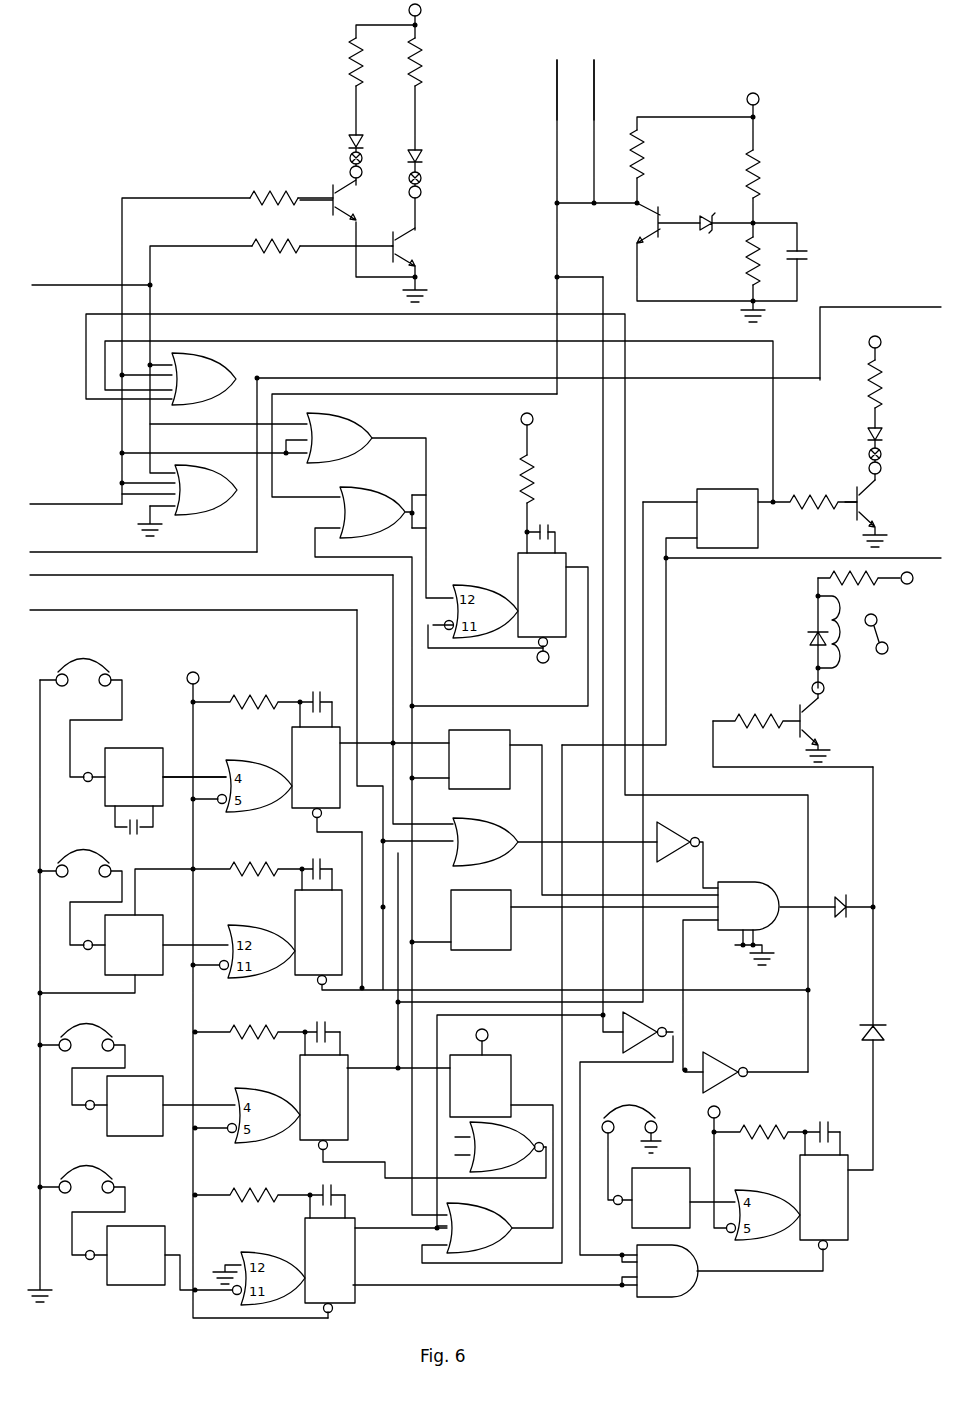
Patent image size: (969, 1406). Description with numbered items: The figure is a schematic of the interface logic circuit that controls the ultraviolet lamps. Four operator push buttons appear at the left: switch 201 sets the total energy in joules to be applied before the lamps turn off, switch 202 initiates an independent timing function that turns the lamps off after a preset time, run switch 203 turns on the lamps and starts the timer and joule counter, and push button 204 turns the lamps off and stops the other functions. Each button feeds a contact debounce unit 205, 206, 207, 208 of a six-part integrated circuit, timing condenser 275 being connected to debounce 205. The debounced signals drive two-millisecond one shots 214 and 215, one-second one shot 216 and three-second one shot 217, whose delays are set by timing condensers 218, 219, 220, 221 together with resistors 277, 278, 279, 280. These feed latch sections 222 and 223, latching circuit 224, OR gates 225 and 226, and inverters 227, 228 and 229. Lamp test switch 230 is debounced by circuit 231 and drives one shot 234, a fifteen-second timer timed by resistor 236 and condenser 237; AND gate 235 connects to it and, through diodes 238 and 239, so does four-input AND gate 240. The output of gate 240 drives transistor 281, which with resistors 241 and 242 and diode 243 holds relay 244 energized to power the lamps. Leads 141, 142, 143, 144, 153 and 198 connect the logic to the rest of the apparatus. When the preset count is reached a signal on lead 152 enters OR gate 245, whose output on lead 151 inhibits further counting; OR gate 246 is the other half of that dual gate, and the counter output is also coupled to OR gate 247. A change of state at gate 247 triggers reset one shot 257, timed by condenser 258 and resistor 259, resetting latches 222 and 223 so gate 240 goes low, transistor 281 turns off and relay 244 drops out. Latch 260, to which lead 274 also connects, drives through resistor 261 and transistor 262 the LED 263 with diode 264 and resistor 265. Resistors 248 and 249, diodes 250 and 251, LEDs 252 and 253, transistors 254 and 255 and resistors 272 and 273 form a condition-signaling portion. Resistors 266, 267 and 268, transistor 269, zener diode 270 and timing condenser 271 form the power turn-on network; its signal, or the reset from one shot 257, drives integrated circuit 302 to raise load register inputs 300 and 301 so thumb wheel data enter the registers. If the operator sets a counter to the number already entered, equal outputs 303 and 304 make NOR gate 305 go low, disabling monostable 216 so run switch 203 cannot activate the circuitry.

The input line 141 is at (49, 504).
The input line 142 is at (40, 548).
The input line 143 is at (554, 90).
The input line 144 is at (54, 604).
The lead 151 is at (880, 332).
The lead 152 is at (43, 285).
The input line 153 is at (594, 90).
The input line 198 is at (48, 571).
The push button switch 201 is at (108, 669).
The push button switch 202 is at (114, 872).
The push button switch 203 is at (112, 1043).
The push button 204 is at (118, 1184).
The contact debounce unit 205 is at (127, 750).
The contact debounce unit 206 is at (142, 923).
The contact debounce unit 207 is at (138, 1084).
The contact debounce unit 208 is at (135, 1239).
The monostable multivibrator integrated circuit 214 is at (328, 818).
The monostable multivibrator integrated circuit 215 is at (294, 924).
The one shot integrated circuit 216 is at (348, 1105).
The one shot integrated circuit 217 is at (348, 1265).
The timing condenser 218 is at (321, 698).
The timing condenser 219 is at (340, 862).
The timing condenser 220 is at (332, 1030).
The timing condenser 221 is at (335, 1183).
The latching integrated circuit section 222 is at (504, 738).
The latching integrated circuit section 223 is at (478, 896).
The latching circuit 224 is at (497, 1058).
The OR gate 225 is at (481, 818).
The OR gate 226 is at (494, 1216).
The gate 227 is at (670, 824).
The gate 228 is at (644, 1028).
The gate 229 is at (718, 1066).
The lamp test switch 230 is at (640, 1106).
The contact debounce integrated circuit 231 is at (664, 1172).
The one-shot dual gate 234 is at (852, 1217).
The AND gate 235 is at (688, 1262).
The resistor 236 is at (768, 1128).
The timing condenser 237 is at (830, 1124).
The diode 238 is at (840, 893).
The diode 239 is at (884, 1036).
The AND gate 240 is at (763, 882).
The resistor 241 is at (767, 720).
The resistor 242 is at (882, 596).
The diode 243 is at (812, 633).
The relay 244 is at (846, 676).
The OR gate 245 is at (224, 371).
The OR gate 246 is at (206, 524).
The OR gate 247 is at (351, 423).
The resistor 248 is at (276, 194).
The resistor 249 is at (277, 242).
The diode 250 is at (346, 140).
The diode 251 is at (420, 151).
The LED 252 is at (350, 158).
The LED 253 is at (421, 180).
The transistor 254 is at (346, 203).
The transistor 255 is at (416, 244).
The one shot dual reset integrated circuit 257 is at (557, 558).
The condenser 258 is at (544, 528).
The resistor 259 is at (530, 478).
The latch portion 260 is at (715, 478).
The resistor 261 is at (812, 496).
The transistor 262 is at (878, 512).
The LED 263 is at (884, 468).
The diode 264 is at (883, 434).
The resistor 265 is at (883, 386).
The resistor 266 is at (643, 162).
The resistor 267 is at (761, 178).
The resistor 268 is at (750, 274).
The transistor 269 is at (660, 209).
The zener diode 270 is at (702, 238).
The timing condenser 271 is at (800, 252).
The resistor 272 is at (348, 65).
The resistor 273 is at (419, 68).
The output line 274 is at (900, 558).
The timing condenser 275 is at (140, 840).
The resistor 277 is at (246, 695).
The resistor 278 is at (232, 866).
The resistor 279 is at (250, 1024).
The resistor 280 is at (252, 1186).
The transistor 281 is at (820, 736).
The load register input 300 is at (439, 497).
The load register input 301 is at (439, 529).
The integrated circuit 302 is at (376, 512).
The equal output 303 is at (444, 1137).
The equal output 304 is at (444, 1155).
The NOR gate 305 is at (508, 1147).